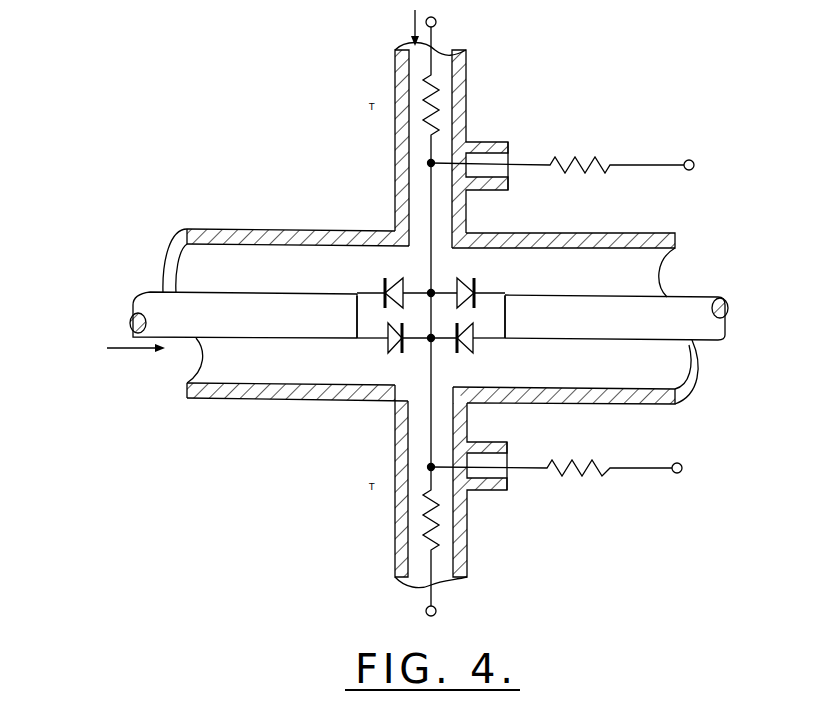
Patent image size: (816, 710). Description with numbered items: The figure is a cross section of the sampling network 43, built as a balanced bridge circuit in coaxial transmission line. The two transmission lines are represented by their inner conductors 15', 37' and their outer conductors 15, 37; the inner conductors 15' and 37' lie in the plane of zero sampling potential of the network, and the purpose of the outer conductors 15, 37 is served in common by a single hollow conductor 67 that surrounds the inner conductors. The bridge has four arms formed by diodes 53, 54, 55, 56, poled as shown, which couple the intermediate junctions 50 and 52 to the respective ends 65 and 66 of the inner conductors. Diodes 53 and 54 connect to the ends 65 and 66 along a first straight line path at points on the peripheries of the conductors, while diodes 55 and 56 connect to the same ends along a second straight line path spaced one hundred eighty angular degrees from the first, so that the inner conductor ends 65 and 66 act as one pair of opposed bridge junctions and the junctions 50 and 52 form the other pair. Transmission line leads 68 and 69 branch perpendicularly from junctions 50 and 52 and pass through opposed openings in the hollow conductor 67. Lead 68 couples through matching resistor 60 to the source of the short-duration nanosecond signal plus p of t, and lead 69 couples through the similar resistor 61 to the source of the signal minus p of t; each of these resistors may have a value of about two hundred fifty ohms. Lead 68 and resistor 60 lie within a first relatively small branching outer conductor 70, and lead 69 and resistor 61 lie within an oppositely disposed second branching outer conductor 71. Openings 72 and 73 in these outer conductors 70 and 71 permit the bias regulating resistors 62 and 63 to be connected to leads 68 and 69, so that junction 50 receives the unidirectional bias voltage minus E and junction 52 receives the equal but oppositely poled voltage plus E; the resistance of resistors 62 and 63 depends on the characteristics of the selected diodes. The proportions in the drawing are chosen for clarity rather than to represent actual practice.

The transmission line outer conductor 15 is at (286, 280).
The inner conductor 15' is at (212, 315).
The transmission line outer conductor 37 is at (575, 297).
The inner conductor 37' is at (640, 309).
The sampling network 43 is at (258, 479).
The junction 50 is at (436, 290).
The junction 52 is at (430, 342).
The diode 53 is at (386, 280).
The diode 54 is at (478, 283).
The diode 55 is at (478, 346).
The diode 56 is at (378, 345).
The matching resistor 60 is at (440, 102).
The matching resistor 61 is at (453, 525).
The bias regulating resistor 62 is at (598, 162).
The bias regulating resistor 63 is at (598, 463).
The inner conductor end 65 is at (353, 315).
The inner conductor end 66 is at (507, 312).
The hollow conductor 67 is at (303, 229).
The transmission line lead 68 is at (412, 183).
The transmission line lead 69 is at (430, 433).
The branching outer conductor 70 is at (397, 74).
The branching outer conductor 71 is at (395, 550).
The opening 72 is at (512, 142).
The opening 73 is at (508, 450).